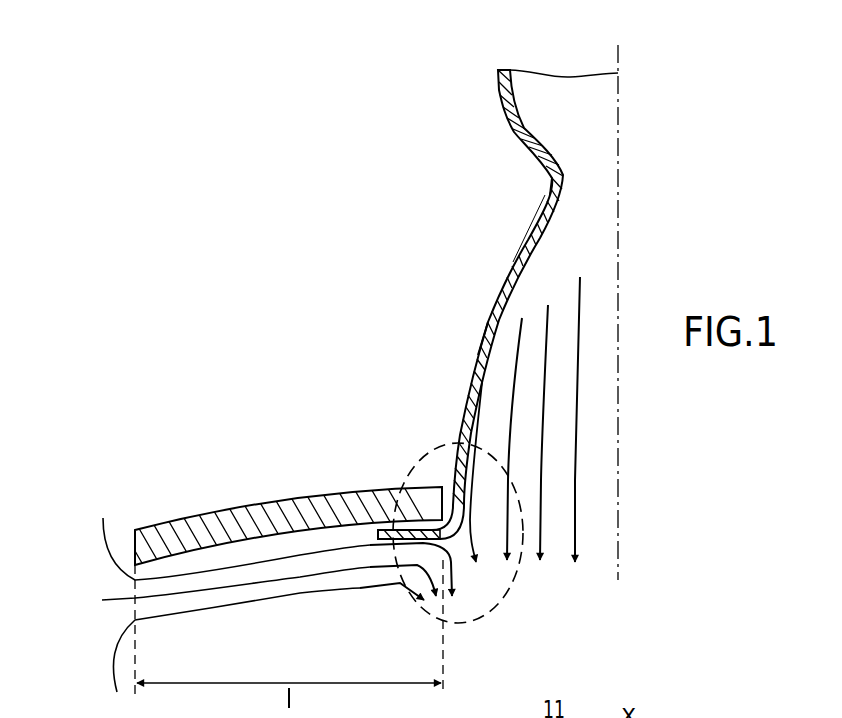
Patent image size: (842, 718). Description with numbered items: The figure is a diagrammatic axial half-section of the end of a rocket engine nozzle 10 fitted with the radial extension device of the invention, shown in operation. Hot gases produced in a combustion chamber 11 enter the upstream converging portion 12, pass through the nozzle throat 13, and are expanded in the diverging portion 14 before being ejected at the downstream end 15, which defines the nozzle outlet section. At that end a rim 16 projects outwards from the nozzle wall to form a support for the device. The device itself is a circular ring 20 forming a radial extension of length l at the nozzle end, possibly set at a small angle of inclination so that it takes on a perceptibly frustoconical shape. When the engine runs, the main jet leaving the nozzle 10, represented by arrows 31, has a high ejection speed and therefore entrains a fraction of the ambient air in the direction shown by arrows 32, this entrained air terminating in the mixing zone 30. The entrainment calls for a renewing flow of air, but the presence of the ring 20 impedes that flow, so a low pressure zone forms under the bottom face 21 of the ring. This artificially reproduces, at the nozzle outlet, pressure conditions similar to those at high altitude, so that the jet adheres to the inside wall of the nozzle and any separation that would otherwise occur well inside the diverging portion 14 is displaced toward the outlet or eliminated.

The rocket engine nozzle 10 is at (502, 257).
The combustion chamber 11 is at (562, 103).
The upstream converging portion 12 is at (502, 113).
The nozzle throat 13 is at (550, 177).
The diverging portion 14 is at (480, 355).
The downstream end 15 is at (462, 530).
The rim 16 is at (403, 541).
The circular ring 20 is at (277, 492).
The bottom face 21 is at (285, 533).
The mixing zone 30 is at (480, 622).
The arrows representing the main jet 31 is at (574, 461).
The arrows representing entrained ambient air 32 is at (110, 663).